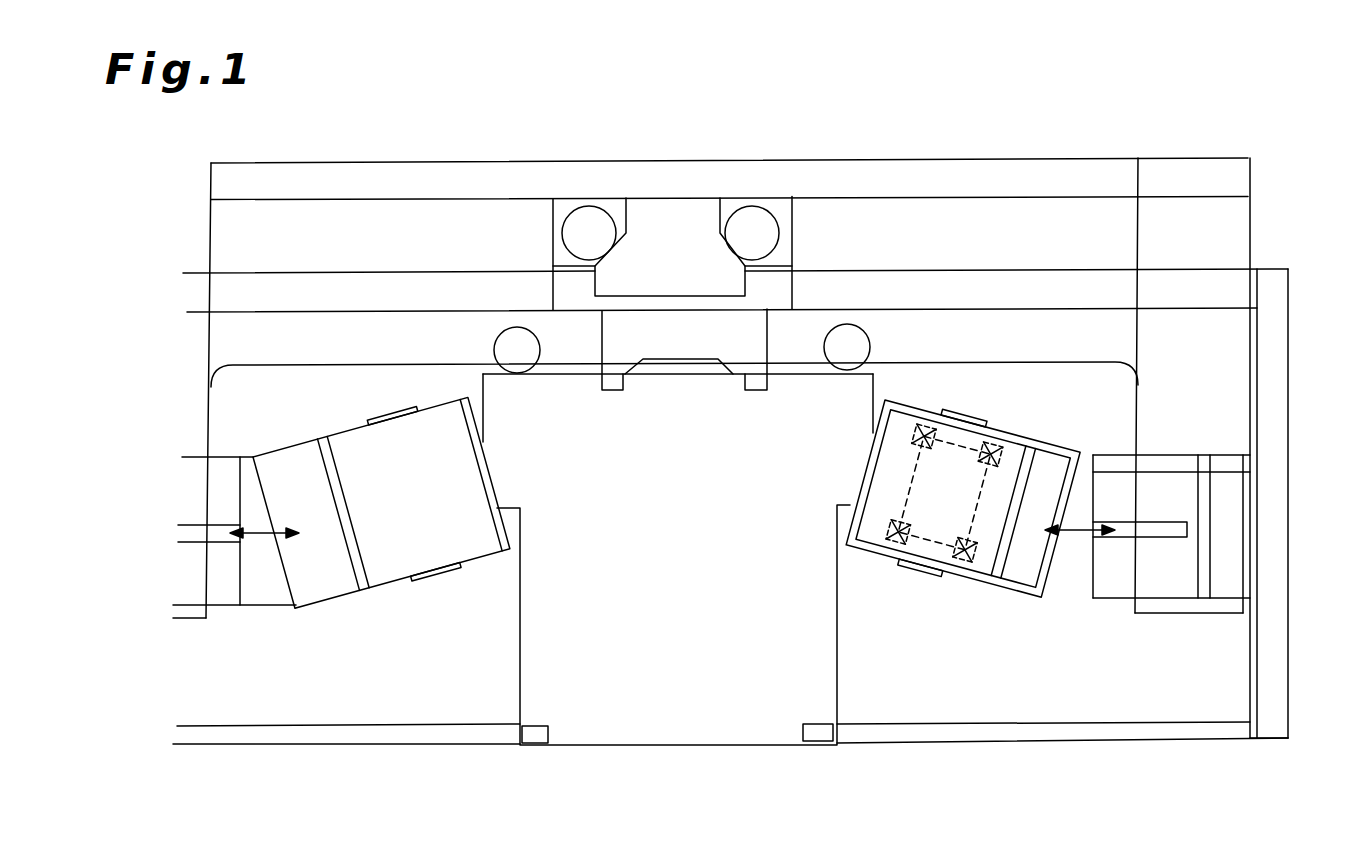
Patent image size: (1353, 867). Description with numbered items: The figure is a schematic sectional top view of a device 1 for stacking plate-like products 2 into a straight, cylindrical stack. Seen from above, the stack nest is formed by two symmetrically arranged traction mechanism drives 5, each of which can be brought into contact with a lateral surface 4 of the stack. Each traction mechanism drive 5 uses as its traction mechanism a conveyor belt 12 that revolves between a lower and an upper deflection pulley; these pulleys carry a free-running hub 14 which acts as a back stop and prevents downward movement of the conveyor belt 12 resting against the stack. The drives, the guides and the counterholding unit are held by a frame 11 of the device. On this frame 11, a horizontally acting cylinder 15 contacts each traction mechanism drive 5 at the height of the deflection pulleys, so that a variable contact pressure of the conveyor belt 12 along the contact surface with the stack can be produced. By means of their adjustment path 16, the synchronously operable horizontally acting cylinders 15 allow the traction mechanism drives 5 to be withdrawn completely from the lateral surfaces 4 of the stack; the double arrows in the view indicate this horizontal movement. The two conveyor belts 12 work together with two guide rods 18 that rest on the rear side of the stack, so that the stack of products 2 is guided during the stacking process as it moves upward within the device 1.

The device 1 is at (1188, 126).
The plate-like products 2 is at (770, 689).
The lateral surface 4 is at (490, 465).
The traction mechanism drive 5 is at (397, 547).
The frame 11 is at (1278, 375).
The conveyor belt 12 is at (878, 430).
The free-running hub 14 is at (918, 577).
The horizontally acting cylinder 15 is at (1168, 565).
The adjustment path 16 is at (1083, 537).
The guide rods 18 is at (510, 350).